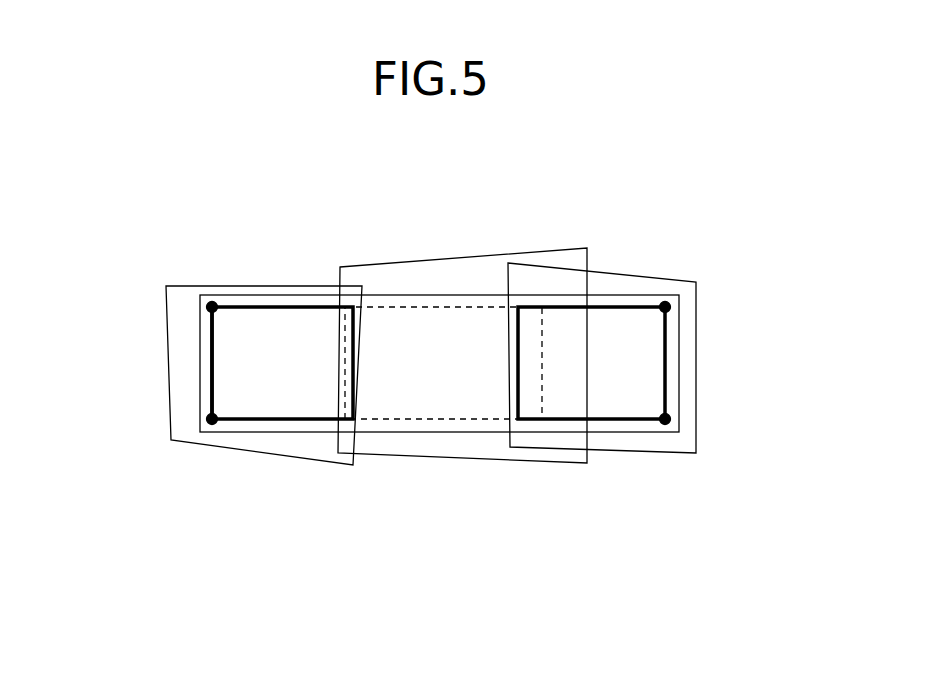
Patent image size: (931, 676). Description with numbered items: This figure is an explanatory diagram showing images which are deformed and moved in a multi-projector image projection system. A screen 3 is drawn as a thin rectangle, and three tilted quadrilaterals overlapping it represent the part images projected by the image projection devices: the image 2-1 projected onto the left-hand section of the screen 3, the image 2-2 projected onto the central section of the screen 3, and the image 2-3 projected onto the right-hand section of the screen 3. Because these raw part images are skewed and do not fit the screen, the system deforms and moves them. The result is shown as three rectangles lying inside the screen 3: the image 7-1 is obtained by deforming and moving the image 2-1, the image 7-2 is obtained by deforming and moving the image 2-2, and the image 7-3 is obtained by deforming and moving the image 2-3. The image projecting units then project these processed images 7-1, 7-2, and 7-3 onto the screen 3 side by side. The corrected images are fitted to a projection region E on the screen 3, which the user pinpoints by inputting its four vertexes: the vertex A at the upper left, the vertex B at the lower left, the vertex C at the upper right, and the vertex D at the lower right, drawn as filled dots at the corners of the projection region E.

The screen 3 is at (680, 382).
The image 2-1 is at (168, 400).
The image 2-2 is at (437, 460).
The image 2-3 is at (697, 322).
The deformed and moved image 7-1 is at (292, 307).
The deformed and moved image 7-2 is at (457, 308).
The deformed and moved image 7-3 is at (627, 305).
The vertex A is at (216, 300).
The vertex B is at (212, 425).
The vertex C is at (667, 302).
The vertex D is at (670, 420).
The projection region E is at (212, 349).